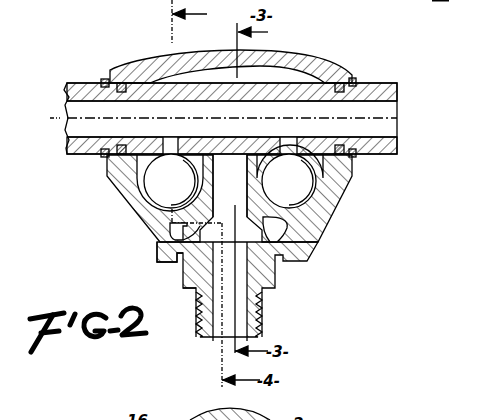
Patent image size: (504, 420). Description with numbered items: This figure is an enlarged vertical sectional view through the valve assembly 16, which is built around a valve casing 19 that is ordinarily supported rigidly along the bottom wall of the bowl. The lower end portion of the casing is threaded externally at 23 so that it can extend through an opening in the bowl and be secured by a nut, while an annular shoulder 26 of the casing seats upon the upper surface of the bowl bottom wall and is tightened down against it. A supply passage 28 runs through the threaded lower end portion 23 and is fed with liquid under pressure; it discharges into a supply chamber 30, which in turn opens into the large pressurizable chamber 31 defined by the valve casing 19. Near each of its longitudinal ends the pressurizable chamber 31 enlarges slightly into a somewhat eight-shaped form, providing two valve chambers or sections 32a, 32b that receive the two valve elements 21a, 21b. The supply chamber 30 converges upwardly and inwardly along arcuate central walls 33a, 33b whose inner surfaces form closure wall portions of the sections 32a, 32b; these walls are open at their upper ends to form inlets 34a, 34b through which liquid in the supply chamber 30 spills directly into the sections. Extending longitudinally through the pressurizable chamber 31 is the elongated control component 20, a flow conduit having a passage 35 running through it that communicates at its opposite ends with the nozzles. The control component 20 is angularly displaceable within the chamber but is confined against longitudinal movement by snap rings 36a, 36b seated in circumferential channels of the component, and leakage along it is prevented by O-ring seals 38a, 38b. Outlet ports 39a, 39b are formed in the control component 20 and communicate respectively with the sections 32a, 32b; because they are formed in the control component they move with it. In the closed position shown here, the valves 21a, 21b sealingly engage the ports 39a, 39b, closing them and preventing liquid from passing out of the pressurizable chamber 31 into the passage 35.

The valve assembly 16 is at (285, 53).
The valve casing 19 is at (343, 74).
The control component 20 is at (398, 86).
The valve element 21a is at (150, 230).
The valve element 21b is at (322, 203).
The threaded lower end portion 23 is at (262, 316).
The annular shoulder 26 is at (296, 262).
The supply passage 28 is at (202, 290).
The supply chamber 30 is at (178, 260).
The pressurizable chamber 31 is at (148, 76).
The valve chamber section 32a is at (146, 170).
The valve chamber section 32b is at (318, 163).
The central wall 33a is at (173, 238).
The central wall 33b is at (290, 230).
The inlet 34a is at (214, 157).
The inlet 34b is at (247, 157).
The passage 35 is at (390, 116).
The snap ring 36a is at (101, 158).
The snap ring 36b is at (352, 158).
The O-ring seal 38a is at (114, 92).
The O-ring seal 38b is at (354, 80).
The outlet port 39a is at (170, 138).
The outlet port 39b is at (292, 140).